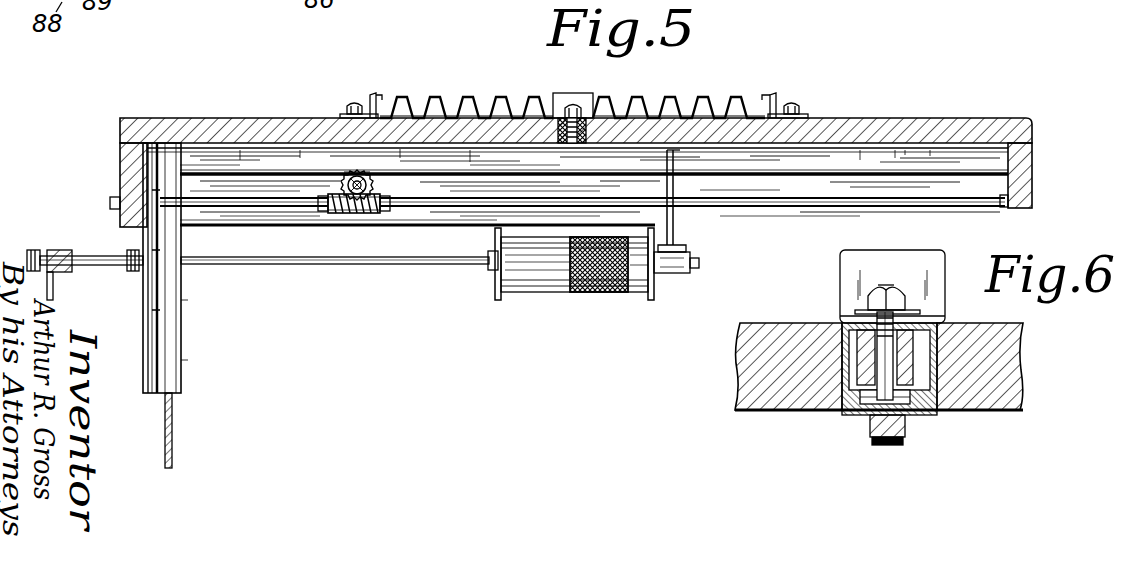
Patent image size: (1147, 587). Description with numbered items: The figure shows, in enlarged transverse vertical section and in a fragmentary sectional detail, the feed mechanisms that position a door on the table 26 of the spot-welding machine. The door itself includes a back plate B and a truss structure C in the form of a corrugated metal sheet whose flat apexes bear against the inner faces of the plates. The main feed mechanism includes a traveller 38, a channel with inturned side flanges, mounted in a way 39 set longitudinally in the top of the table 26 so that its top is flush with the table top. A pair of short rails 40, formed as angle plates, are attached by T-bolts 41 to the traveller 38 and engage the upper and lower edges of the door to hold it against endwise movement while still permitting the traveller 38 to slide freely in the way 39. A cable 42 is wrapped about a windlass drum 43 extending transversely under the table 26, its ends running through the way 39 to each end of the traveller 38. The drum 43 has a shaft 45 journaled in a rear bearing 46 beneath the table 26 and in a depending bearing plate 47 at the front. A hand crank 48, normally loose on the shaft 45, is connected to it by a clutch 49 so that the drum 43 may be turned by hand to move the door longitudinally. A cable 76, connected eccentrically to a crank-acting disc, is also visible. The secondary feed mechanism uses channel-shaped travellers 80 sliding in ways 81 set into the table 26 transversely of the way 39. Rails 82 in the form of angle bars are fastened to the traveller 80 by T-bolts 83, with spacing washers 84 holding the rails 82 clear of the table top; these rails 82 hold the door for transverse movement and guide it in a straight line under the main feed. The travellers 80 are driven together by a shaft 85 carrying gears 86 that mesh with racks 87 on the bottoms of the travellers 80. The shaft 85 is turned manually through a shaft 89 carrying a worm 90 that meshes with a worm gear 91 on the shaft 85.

In FIG. 5, the table 26 is at (128, 162).
In FIG. 6, the table 26 is at (760, 350).
In FIG. 5, the traveller 38 is at (583, 123).
In FIG. 5, the way 39 is at (562, 135).
In FIG. 5, the short rails 40 is at (577, 102).
In FIG. 5, the T-bolts 41 is at (585, 118).
In FIG. 5, the cable 42 is at (610, 292).
In FIG. 5, the windlass drum 43 is at (540, 280).
In FIG. 5, the shaft 45 is at (385, 265).
In FIG. 5, the rear bearing 46 is at (680, 243).
In FIG. 5, the bearing plate 47 is at (145, 318).
In FIG. 5, the hand crank 48 is at (54, 290).
In FIG. 5, the clutch 49 is at (80, 254).
In FIG. 5, the cable 76 is at (172, 418).
In FIG. 6, the travellers 80 is at (842, 410).
In FIG. 5, the ways 81 is at (835, 173).
In FIG. 6, the ways 81 is at (792, 410).
In FIG. 5, the rails 82 is at (373, 95).
In FIG. 6, the rails 82 is at (855, 262).
In FIG. 5, the T-bolts 83 is at (352, 104).
In FIG. 6, the T-bolts 83 is at (885, 288).
In FIG. 6, the spacing washers 84 is at (865, 345).
In FIG. 5, the shaft 85 is at (346, 214).
In FIG. 5, the gears 86 is at (342, 184).
In FIG. 6, the racks 87 is at (905, 436).
In FIG. 5, the shaft 89 is at (300, 208).
In FIG. 5, the worm 90 is at (332, 214).
In FIG. 5, the worm gear 91 is at (362, 176).
In FIG. 5, the back plate B is at (468, 118).
In FIG. 5, the truss structure C is at (440, 100).